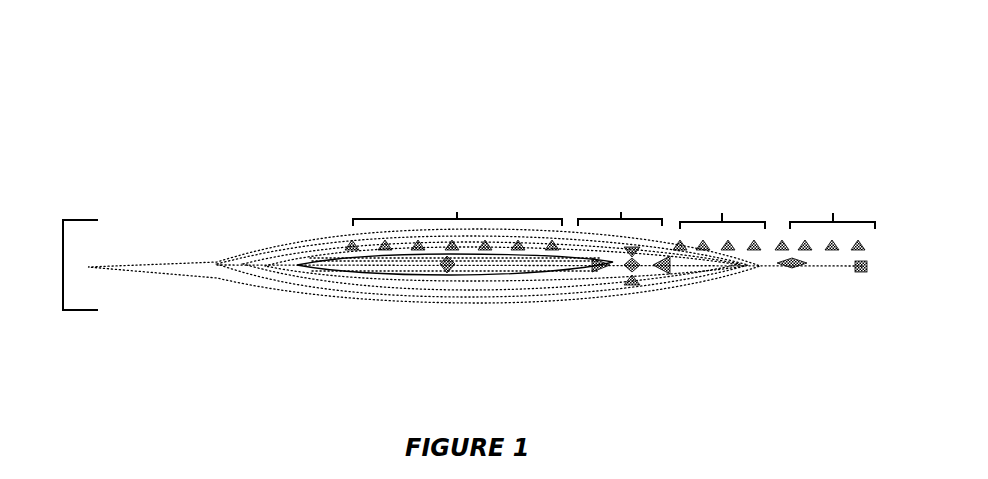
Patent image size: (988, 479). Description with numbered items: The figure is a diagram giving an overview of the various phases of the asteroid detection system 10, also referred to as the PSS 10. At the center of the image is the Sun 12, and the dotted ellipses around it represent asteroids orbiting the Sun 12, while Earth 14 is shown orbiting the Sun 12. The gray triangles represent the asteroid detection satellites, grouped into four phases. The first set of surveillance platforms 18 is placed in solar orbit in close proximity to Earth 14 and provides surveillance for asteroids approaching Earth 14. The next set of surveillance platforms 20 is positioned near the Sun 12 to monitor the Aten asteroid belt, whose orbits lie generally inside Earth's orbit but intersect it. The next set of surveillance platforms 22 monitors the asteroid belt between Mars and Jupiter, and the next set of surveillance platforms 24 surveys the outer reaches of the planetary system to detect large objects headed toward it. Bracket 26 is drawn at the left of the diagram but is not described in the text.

The asteroid detection system 10 is at (252, 80).
The Sun 12 is at (445, 269).
The Earth 14 is at (630, 269).
The first set of surveillance platforms 18 is at (615, 228).
The second set of surveillance platforms 20 is at (453, 212).
The third set of surveillance platforms 22 is at (719, 210).
The fourth set of surveillance platforms 24 is at (825, 220).
The inlet region 26 is at (63, 265).